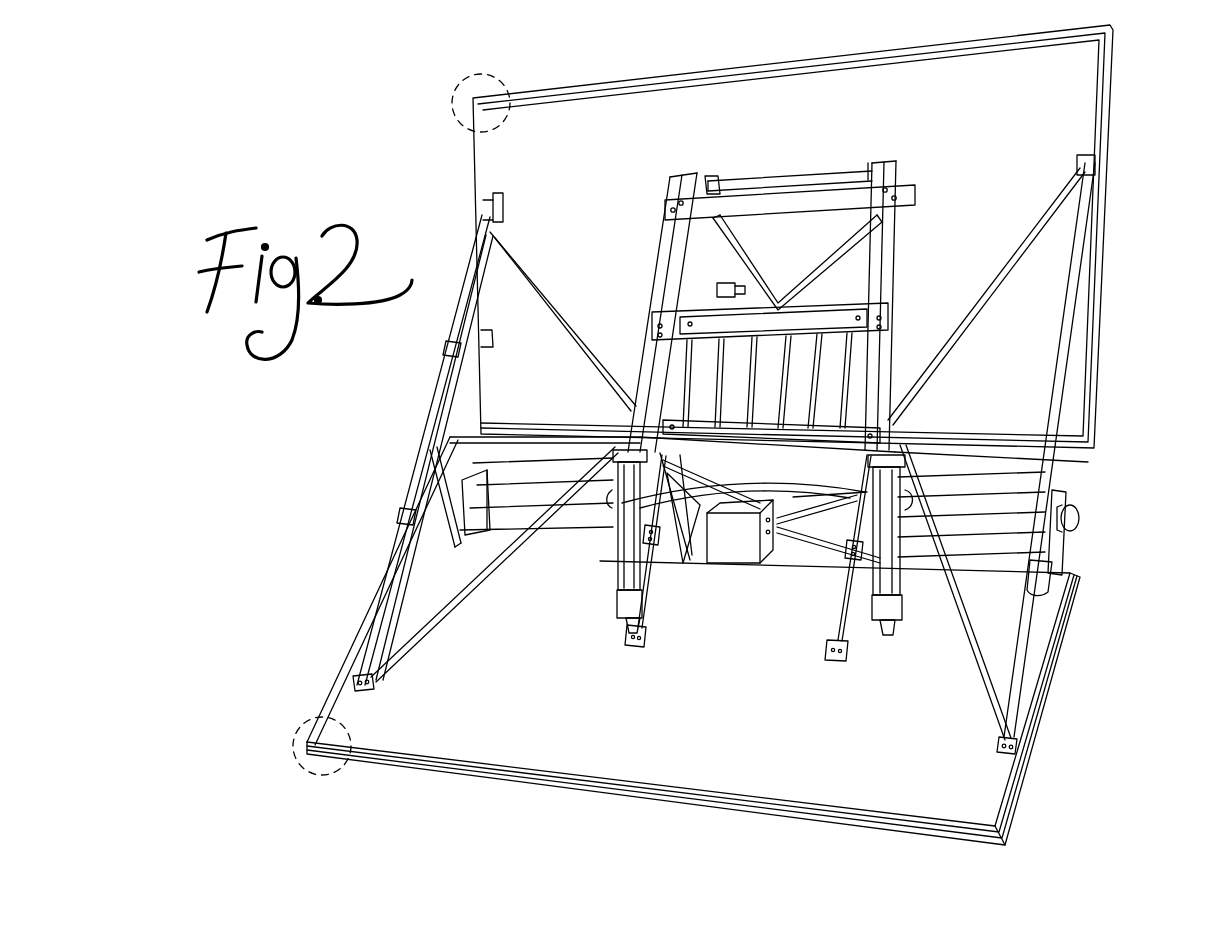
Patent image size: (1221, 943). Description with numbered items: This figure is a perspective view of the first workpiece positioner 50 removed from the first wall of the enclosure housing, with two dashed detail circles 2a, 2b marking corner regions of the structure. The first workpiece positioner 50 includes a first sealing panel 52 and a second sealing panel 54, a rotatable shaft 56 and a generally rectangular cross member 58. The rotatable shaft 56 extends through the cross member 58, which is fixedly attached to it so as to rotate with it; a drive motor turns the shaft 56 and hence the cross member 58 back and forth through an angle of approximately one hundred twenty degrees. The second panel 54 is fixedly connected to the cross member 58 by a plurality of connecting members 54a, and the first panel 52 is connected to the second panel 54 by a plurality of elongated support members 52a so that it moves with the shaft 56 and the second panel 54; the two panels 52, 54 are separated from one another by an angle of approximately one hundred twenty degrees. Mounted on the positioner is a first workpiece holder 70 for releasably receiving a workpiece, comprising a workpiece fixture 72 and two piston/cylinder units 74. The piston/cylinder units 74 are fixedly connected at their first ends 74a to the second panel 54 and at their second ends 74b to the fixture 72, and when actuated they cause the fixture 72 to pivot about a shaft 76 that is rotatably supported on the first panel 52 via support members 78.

The first workpiece positioner 50 is at (1118, 199).
The first sealing panel 52 is at (1075, 395).
The elongated support members 52a is at (445, 372).
The second sealing panel 54 is at (537, 750).
The connecting members 54a is at (398, 517).
The rotatable shaft 56 is at (1080, 518).
The cross member 58 is at (1064, 492).
The first workpiece holder 70 is at (915, 300).
The workpiece fixture 72 is at (808, 350).
The piston/cylinder units 74 is at (628, 560).
The first ends 74a is at (630, 613).
The second ends 74b is at (893, 462).
The shaft 76 is at (843, 183).
The support members 78 is at (880, 186).
The detail view 2a is at (465, 120).
The detail view 2b is at (303, 754).